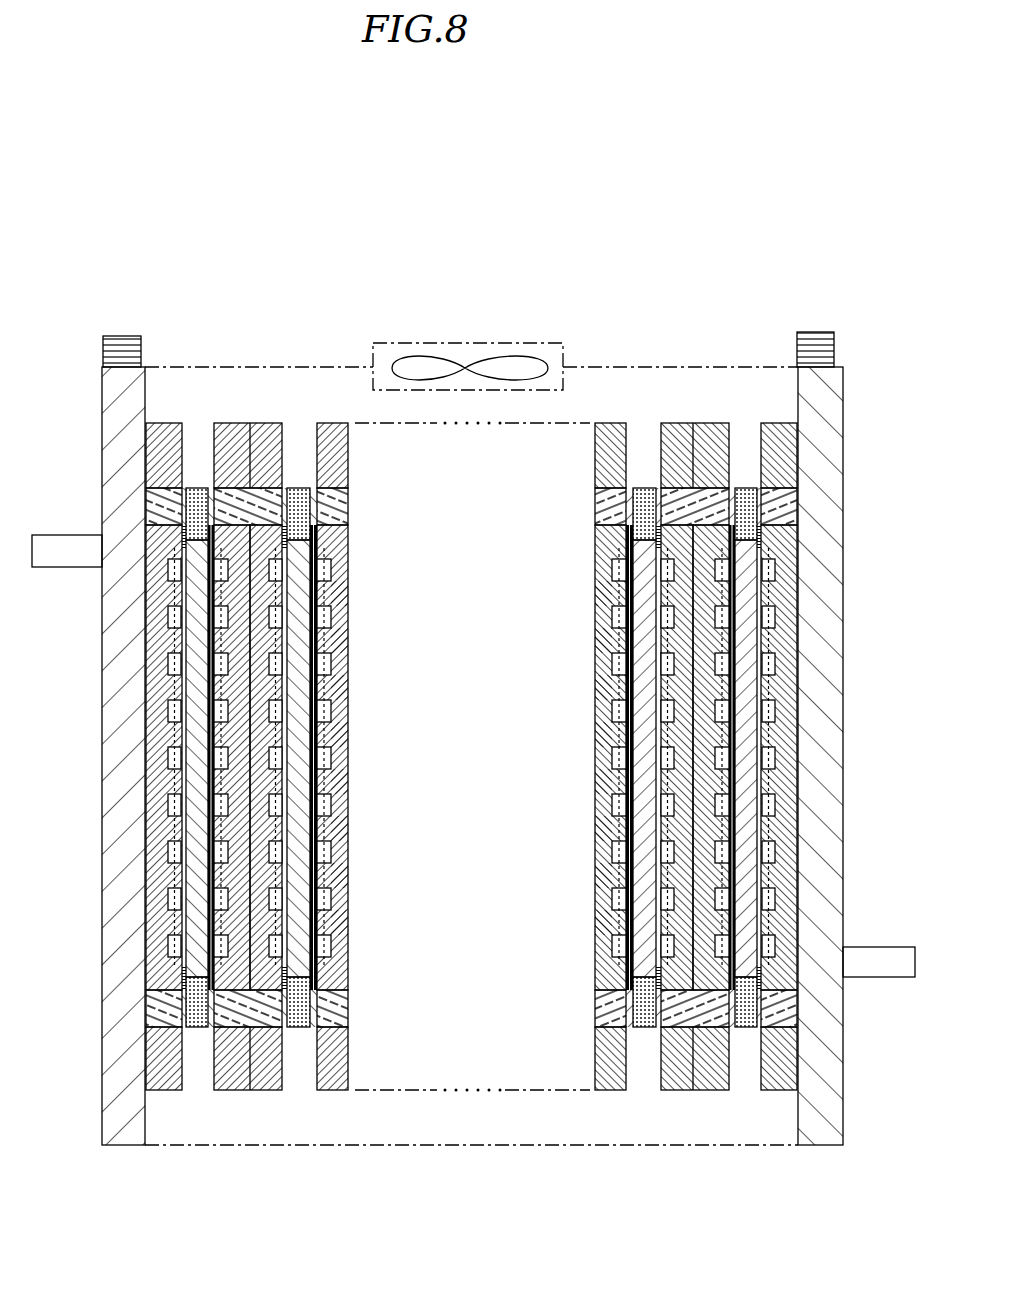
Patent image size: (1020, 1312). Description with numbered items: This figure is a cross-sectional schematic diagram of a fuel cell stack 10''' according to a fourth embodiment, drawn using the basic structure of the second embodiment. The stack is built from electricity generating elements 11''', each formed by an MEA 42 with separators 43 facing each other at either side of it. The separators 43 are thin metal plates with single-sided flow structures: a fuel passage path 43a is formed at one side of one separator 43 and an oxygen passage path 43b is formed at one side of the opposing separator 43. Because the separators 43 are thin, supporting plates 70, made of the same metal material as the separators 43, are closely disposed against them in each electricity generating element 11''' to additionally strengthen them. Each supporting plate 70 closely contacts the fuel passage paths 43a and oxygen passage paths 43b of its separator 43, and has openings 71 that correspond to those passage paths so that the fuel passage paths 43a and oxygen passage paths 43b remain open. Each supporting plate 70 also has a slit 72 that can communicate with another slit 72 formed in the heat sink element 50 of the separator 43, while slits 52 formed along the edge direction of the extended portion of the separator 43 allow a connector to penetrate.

The fuel cell stack 10''' is at (473, 691).
The electricity generating element 11''' is at (471, 817).
The MEA 42 is at (303, 965).
The separator 43 is at (343, 1106).
The fuel passage path 43a is at (290, 803).
The oxygen passage path 43b is at (340, 756).
The heat sink element 50 is at (362, 463).
The slit 52 is at (208, 487).
The supporting plate 70 is at (322, 712).
The opening 71 is at (308, 643).
The slit 72 is at (256, 498).